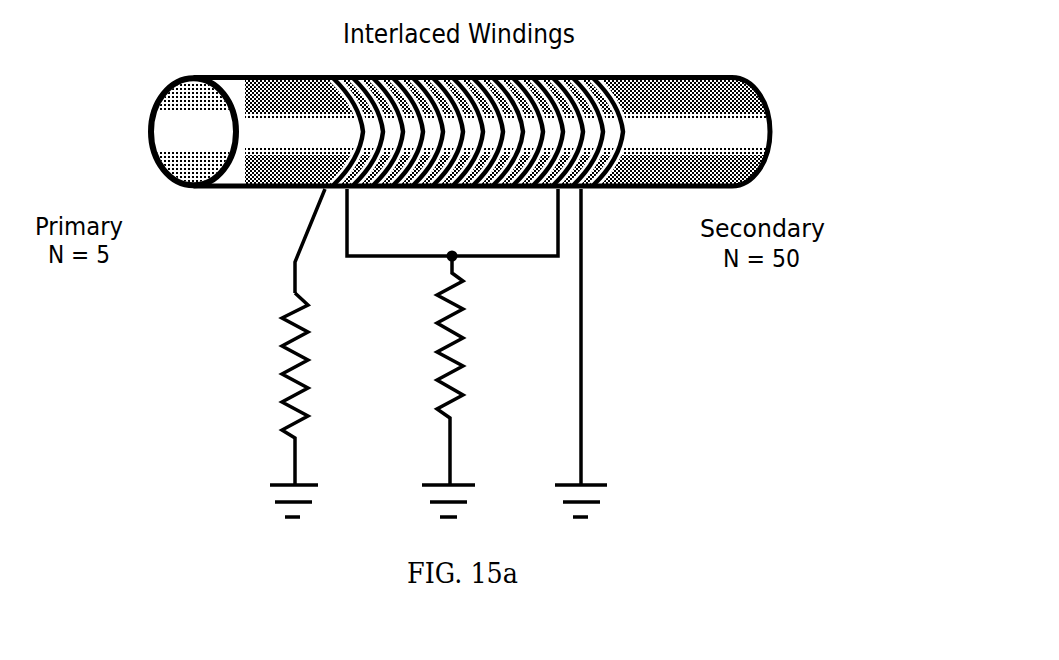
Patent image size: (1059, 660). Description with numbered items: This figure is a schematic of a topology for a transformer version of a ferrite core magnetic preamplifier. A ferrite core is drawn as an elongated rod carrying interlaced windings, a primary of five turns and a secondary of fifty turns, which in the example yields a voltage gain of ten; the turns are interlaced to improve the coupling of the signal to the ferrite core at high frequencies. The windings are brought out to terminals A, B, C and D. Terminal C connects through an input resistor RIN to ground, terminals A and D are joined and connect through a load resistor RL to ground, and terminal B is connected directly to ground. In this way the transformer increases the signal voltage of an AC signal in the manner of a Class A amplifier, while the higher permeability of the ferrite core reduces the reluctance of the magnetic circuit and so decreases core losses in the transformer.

The primary winding terminal A is at (399, 222).
The secondary winding terminal B is at (584, 353).
The primary winding terminal C is at (292, 241).
The secondary winding terminal D is at (505, 222).
The input resistor RIN is at (275, 405).
The load resistor RL is at (463, 386).